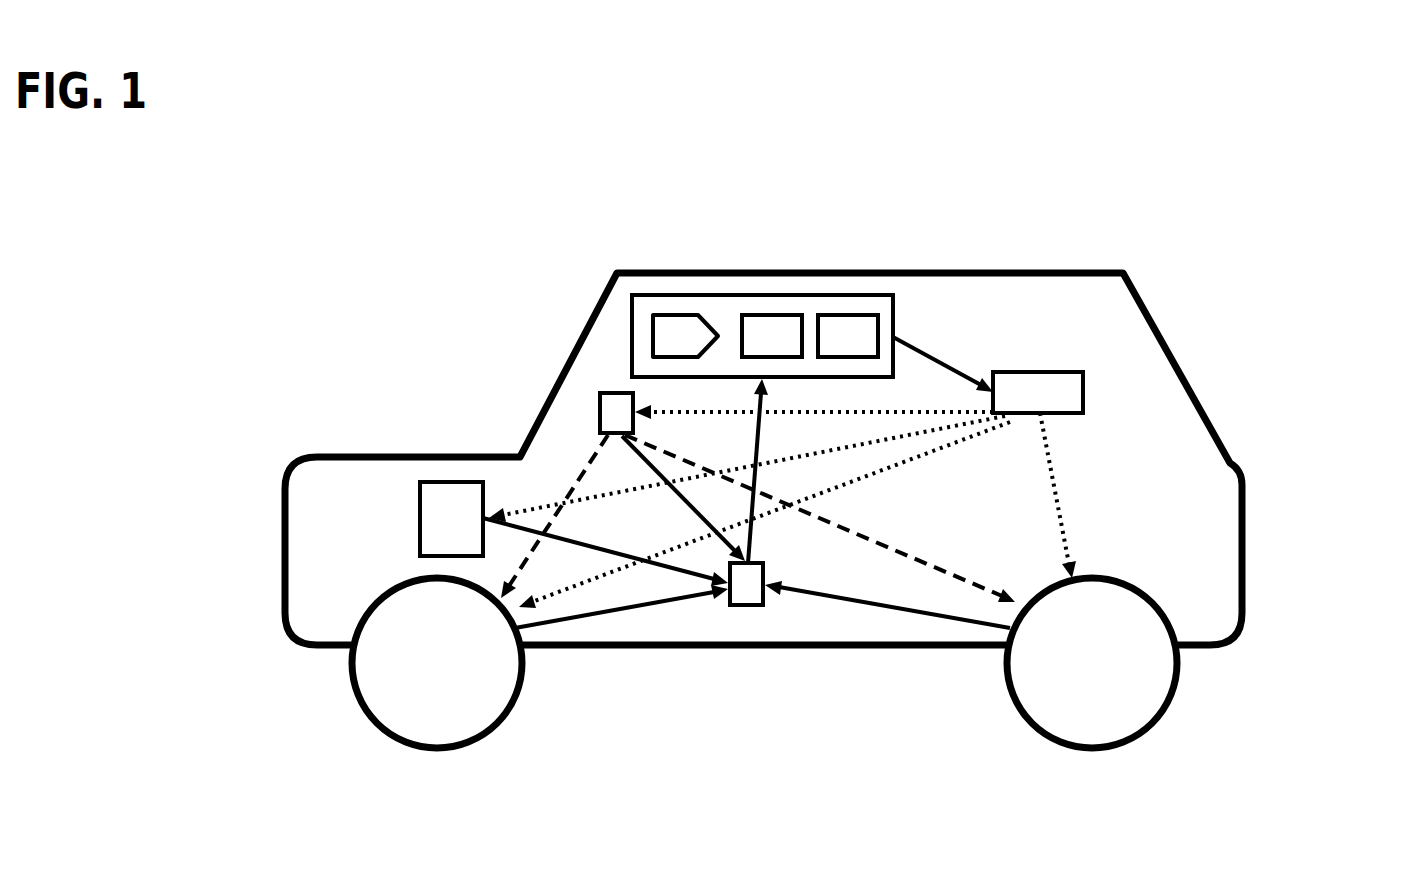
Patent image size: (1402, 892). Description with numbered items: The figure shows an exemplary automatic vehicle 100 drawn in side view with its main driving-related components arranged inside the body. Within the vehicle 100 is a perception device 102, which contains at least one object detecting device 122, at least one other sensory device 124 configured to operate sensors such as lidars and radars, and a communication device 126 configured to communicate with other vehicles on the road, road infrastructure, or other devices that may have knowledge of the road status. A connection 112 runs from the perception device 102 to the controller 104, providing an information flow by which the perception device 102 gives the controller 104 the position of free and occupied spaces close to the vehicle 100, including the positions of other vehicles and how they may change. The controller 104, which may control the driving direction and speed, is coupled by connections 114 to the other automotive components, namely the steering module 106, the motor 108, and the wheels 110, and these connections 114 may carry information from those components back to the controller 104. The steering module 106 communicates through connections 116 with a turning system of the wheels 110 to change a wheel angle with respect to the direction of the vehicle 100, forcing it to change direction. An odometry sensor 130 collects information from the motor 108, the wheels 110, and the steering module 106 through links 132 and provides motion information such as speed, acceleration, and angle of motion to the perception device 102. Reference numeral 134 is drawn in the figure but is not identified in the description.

The vehicle 100 is at (790, 274).
The perception device 102 is at (763, 295).
The controller 104 is at (1038, 372).
The steering module 106 is at (617, 393).
The motor 108 is at (449, 482).
The wheels 110 is at (522, 708).
The connection 112 is at (942, 362).
The connections 114 is at (840, 452).
The connections 116 is at (490, 520).
The object detecting device 122 is at (677, 315).
The sensory device 124 is at (773, 315).
The communication device 126 is at (848, 315).
The odometry sensor 130 is at (745, 605).
The links 132 is at (650, 470).
The solid signal connections 134 is at (763, 457).